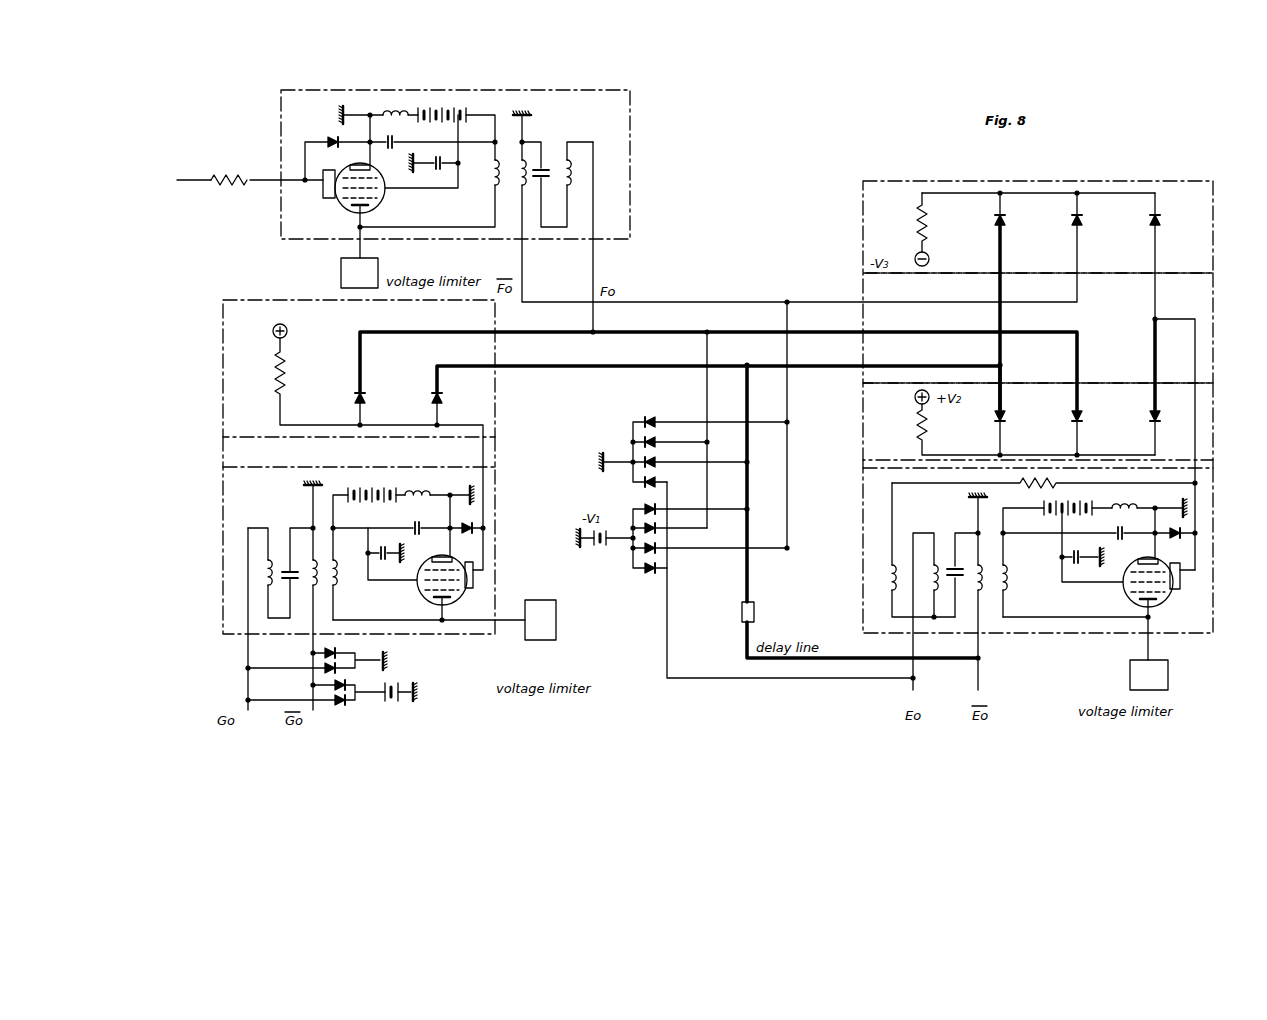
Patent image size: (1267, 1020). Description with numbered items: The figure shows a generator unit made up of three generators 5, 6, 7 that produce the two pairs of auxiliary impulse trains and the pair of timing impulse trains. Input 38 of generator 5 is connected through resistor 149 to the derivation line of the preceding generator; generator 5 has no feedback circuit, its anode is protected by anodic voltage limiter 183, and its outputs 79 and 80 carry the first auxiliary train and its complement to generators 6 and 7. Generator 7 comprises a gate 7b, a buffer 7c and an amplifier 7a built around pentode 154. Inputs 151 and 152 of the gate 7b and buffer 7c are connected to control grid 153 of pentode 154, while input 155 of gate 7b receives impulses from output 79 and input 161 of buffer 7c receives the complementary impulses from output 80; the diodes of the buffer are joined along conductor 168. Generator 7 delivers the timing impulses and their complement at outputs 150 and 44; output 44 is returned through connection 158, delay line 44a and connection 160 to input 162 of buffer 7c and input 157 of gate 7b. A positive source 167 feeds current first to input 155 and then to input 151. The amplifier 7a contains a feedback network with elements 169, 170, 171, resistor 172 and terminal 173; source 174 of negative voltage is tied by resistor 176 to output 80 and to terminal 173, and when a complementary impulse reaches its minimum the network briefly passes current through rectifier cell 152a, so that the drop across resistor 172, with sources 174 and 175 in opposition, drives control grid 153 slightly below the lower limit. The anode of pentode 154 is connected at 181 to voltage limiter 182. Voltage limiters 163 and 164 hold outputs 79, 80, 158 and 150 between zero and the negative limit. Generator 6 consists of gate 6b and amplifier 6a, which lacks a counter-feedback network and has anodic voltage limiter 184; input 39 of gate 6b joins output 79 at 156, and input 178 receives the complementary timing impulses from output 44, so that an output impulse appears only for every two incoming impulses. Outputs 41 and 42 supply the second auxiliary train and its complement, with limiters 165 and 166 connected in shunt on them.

The generator 5 is at (630, 145).
The generator 6 is at (234, 300).
The amplifier 6a is at (243, 505).
The gate 6b is at (238, 375).
The generator 7 is at (862, 219).
The amplifier 7a is at (1203, 596).
The gate 7b is at (1203, 400).
The buffer 7c is at (1193, 192).
The input 38 is at (196, 181).
The input 39 is at (505, 333).
The output 41 is at (247, 652).
The output 42 is at (312, 644).
The output 44 is at (981, 675).
The delay line 44a is at (755, 615).
The output 79 is at (597, 261).
The output 80 is at (520, 255).
The resistor 149 is at (220, 177).
The output 150 is at (911, 680).
The input 151 is at (1156, 372).
The input 152 is at (1156, 290).
The rectifier cell 152a is at (1162, 226).
The control grid 153 is at (1193, 574).
The pentode 154 is at (1167, 606).
The input 155 is at (1079, 372).
The connection point 156 is at (596, 334).
The input 157 is at (1001, 372).
The connection 158 is at (743, 367).
The connection 160 is at (976, 661).
The input 161 is at (1078, 290).
The input 162 is at (1001, 290).
The voltage limiter 163 is at (633, 428).
The voltage limiter 164 is at (599, 548).
The limiter 165 is at (343, 656).
The limiter 166 is at (400, 684).
The source 167 is at (915, 402).
The conductor 168 is at (1098, 192).
The feedback network terminal 169 is at (976, 532).
The feedback network element 170 is at (932, 620).
The feedback network element 171 is at (878, 576).
The resistor 172 is at (1062, 482).
The terminal 173 is at (1198, 485).
The source 174 is at (931, 257).
The source 175 is at (957, 577).
The resistor 176 is at (933, 219).
The input 178 is at (718, 388).
The anode connection 181 is at (1146, 620).
The voltage limiter 182 is at (1170, 682).
The anodic voltage limiter 183 is at (379, 273).
The anodic voltage limiter 184 is at (543, 642).